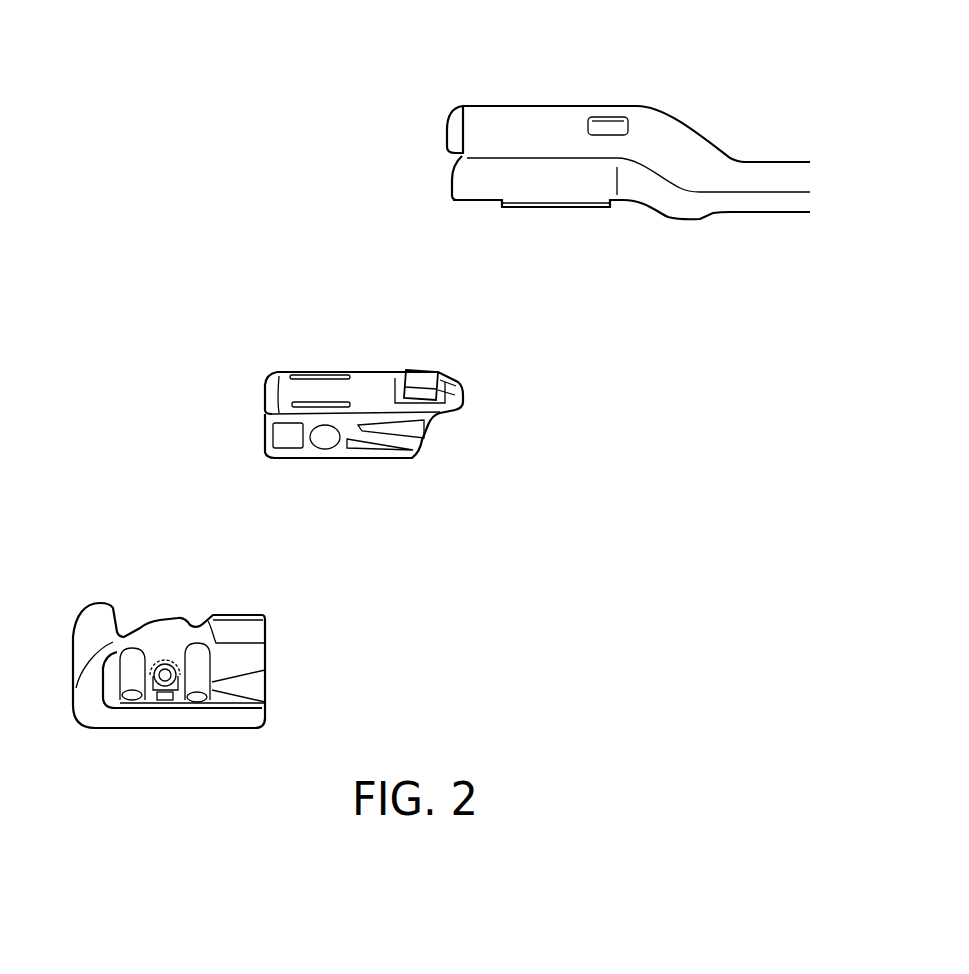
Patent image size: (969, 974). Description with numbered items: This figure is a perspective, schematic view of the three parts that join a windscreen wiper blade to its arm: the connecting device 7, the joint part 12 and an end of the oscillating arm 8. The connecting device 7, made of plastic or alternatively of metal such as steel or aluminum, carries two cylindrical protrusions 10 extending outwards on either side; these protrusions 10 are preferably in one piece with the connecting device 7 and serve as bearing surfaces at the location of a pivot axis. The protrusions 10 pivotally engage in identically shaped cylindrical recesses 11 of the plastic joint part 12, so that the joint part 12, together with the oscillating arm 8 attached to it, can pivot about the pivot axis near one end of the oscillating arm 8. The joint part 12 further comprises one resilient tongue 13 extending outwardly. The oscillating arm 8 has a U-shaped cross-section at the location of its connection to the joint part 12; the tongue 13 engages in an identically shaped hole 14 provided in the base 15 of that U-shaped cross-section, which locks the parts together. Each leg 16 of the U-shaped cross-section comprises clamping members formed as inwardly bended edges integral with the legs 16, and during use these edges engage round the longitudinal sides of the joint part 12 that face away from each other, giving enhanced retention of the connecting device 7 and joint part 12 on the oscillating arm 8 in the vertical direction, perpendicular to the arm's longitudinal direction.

The connecting device 7 is at (147, 648).
The oscillating arm 8 is at (600, 148).
The cylindrical protrusions 10 is at (163, 618).
The cylindrical recesses 11 is at (323, 448).
The joint part 12 is at (342, 407).
The resilient tongue 13 is at (420, 380).
The hole 14 is at (607, 125).
The base 15 is at (505, 130).
The legs 16 is at (455, 132).